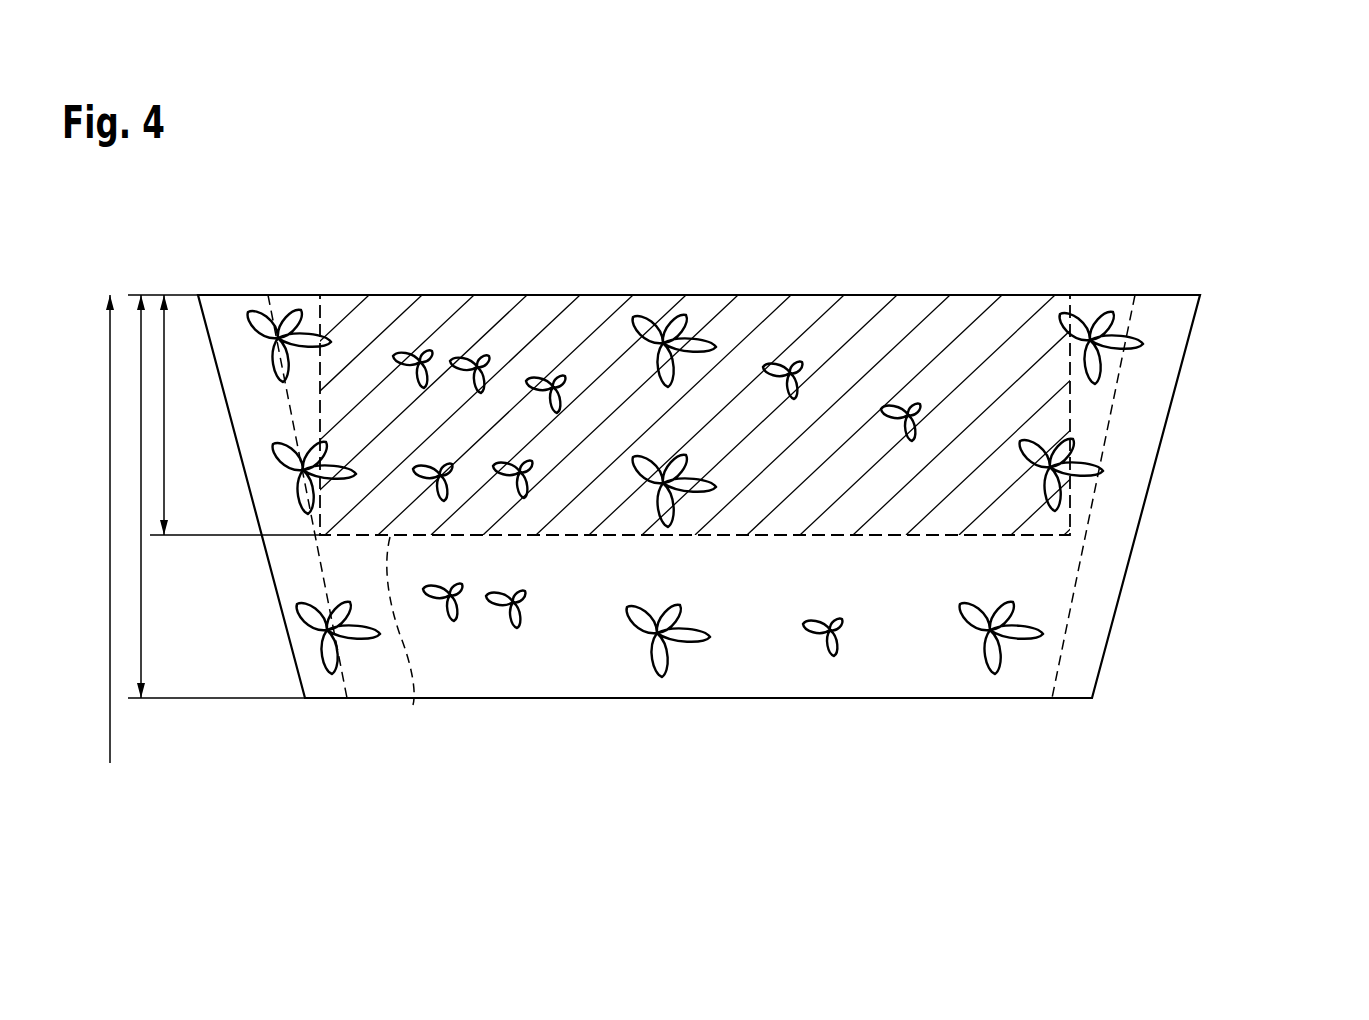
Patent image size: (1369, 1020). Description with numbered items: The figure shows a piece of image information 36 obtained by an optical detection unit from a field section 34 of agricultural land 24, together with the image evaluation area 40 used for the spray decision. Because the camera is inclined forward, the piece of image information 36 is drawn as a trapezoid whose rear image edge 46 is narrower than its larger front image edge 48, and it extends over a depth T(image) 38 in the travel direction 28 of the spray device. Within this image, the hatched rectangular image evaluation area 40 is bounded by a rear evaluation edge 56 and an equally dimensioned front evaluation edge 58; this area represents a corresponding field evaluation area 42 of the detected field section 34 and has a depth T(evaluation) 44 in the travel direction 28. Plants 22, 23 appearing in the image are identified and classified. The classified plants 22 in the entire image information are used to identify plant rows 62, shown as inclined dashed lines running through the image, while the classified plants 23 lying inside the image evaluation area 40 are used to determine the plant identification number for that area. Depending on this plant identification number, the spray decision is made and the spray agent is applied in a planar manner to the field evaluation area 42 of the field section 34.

The plants 22 is at (282, 322).
The plants 23 is at (470, 365).
The agricultural land 24 is at (973, 675).
The travel direction 28 is at (110, 737).
The field section 34 is at (768, 497).
The piece of image information 36 is at (1240, 295).
The depth T(image) 38 is at (143, 617).
The image evaluation area 40 is at (716, 378).
The field evaluation area 42 is at (387, 297).
The depth T(evaluation) 44 is at (166, 508).
The rear image edge 46 is at (475, 700).
The front image edge 48 is at (237, 293).
The rear evaluation edge 56 is at (413, 705).
The front evaluation edge 58 is at (716, 378).
The plant rows 62 is at (320, 573).